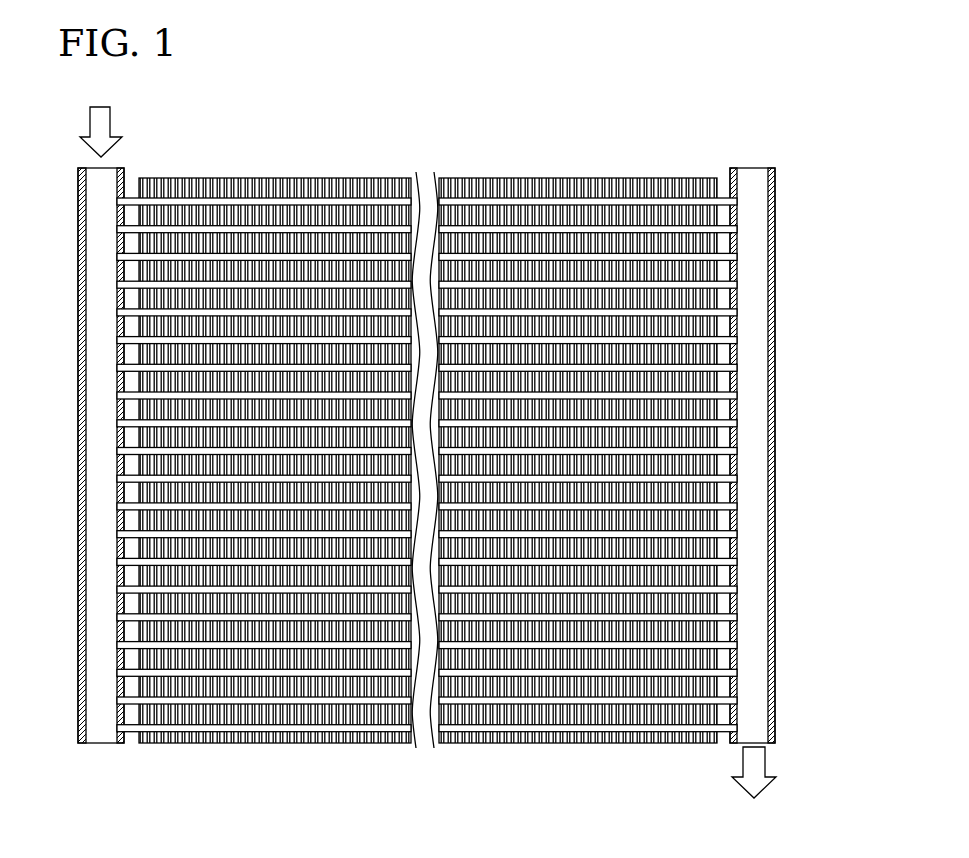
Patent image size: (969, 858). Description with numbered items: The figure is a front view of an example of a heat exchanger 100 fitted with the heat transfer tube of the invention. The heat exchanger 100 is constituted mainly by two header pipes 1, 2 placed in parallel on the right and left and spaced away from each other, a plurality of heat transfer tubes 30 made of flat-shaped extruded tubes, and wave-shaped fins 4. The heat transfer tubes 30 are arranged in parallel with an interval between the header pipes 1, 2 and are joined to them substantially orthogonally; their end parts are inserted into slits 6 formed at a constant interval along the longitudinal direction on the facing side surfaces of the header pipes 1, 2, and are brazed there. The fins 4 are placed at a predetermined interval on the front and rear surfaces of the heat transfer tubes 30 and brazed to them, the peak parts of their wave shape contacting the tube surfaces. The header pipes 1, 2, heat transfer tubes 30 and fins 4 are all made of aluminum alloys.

The heat exchanger 100 is at (802, 152).
The header pipe 1 is at (102, 309).
The header pipe 2 is at (753, 587).
The heat transfer tube 30 is at (616, 195).
The fin 4 is at (248, 182).
The slit 6 is at (122, 641).